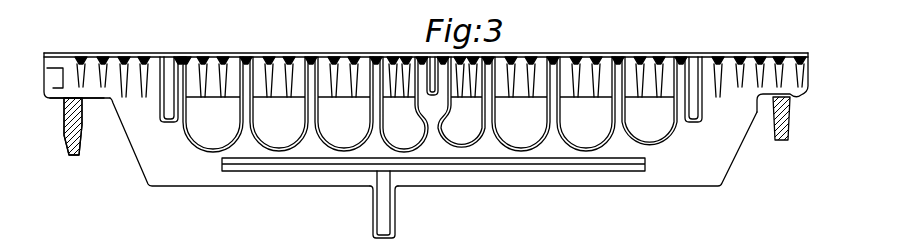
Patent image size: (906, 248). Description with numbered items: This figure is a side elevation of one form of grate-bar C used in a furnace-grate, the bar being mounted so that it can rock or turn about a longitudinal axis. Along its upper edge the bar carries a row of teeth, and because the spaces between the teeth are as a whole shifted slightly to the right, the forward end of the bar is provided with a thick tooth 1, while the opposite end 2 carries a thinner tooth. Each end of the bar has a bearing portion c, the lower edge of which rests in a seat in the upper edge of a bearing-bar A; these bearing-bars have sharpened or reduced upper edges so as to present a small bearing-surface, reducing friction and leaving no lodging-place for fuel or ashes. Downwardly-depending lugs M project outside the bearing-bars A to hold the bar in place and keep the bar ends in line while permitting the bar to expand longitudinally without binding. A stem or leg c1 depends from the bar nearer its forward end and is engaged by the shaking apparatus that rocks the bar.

The thick tooth 1 is at (47, 65).
The right end of comb bar 2 is at (808, 63).
The grate-bar C is at (426, 100).
The bearing portion c is at (95, 87).
The stem or leg c1 is at (382, 217).
The downwardly-depending lug M is at (53, 103).
The bearing-bar A is at (67, 150).